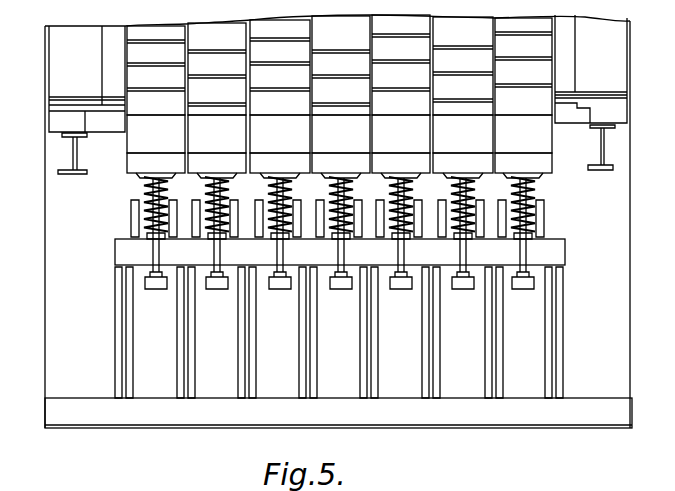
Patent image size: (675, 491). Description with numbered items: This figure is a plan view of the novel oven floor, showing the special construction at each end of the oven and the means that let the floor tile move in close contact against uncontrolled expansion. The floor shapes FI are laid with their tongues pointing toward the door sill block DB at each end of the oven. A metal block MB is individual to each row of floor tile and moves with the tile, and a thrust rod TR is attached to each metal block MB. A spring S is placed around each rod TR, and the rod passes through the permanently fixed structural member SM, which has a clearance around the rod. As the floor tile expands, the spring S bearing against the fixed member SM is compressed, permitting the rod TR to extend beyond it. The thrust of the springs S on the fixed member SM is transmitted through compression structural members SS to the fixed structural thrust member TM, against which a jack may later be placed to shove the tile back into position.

The floor shape FI is at (339, 65).
The door sill block DB is at (339, 134).
The metal block MB is at (339, 165).
The spring S is at (145, 192).
The structural member SM is at (340, 252).
The thrust rod TR is at (211, 270).
The compression structural members SS is at (307, 327).
The structural thrust member TM is at (338, 413).